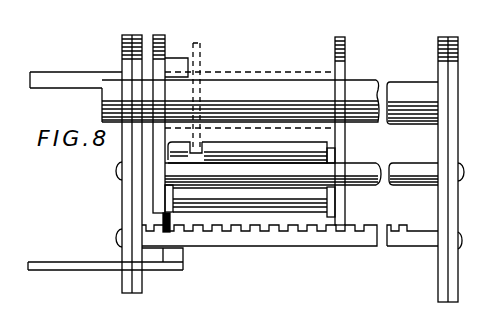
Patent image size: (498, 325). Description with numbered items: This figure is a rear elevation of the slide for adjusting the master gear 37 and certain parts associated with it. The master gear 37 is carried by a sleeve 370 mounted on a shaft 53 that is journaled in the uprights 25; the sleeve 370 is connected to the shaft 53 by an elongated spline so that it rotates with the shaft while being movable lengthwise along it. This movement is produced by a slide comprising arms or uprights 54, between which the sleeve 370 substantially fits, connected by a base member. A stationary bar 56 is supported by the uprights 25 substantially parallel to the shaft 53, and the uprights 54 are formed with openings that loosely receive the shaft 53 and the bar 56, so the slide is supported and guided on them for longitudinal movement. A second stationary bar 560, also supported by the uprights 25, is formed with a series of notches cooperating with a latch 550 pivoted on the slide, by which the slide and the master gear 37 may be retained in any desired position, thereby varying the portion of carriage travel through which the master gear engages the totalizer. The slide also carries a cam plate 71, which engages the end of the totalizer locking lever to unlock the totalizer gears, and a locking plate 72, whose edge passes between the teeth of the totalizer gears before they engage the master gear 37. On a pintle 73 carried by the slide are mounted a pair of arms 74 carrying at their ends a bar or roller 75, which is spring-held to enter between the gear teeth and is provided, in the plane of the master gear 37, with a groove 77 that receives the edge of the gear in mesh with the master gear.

The uprights 25 is at (127, 288).
The master gear 37 is at (200, 47).
The shaft 53 is at (418, 87).
The arms or uprights of the slide 54 is at (158, 35).
The stationary bar 56 is at (430, 184).
The cam plate 71 is at (88, 262).
The locking plate 72 is at (78, 72).
The pintle 73 is at (272, 200).
The arms 74 is at (331, 155).
The bar or roller 75 is at (300, 138).
The groove 77 is at (193, 146).
The sleeve 370 is at (282, 62).
The latch 550 is at (172, 232).
The second stationary bar 560 is at (322, 240).